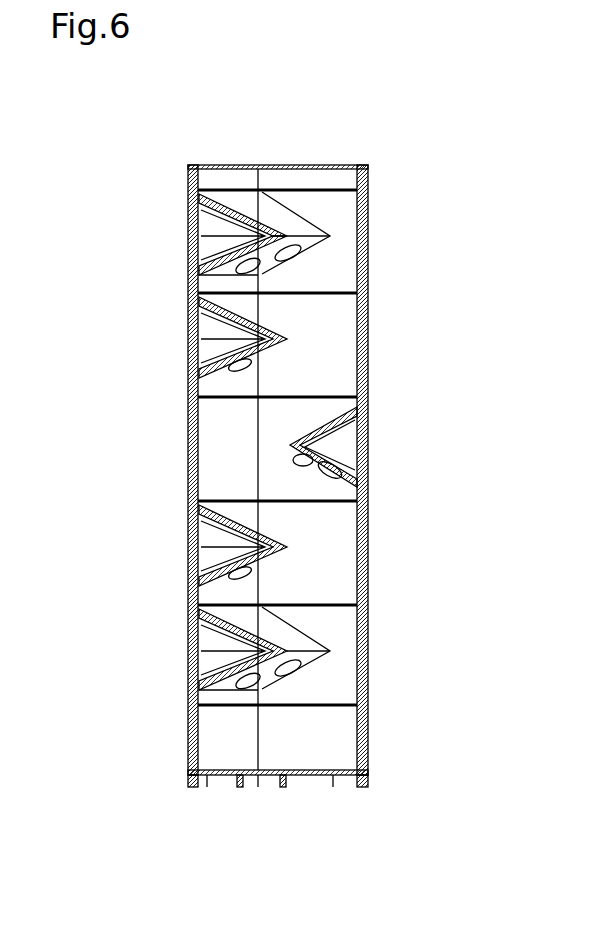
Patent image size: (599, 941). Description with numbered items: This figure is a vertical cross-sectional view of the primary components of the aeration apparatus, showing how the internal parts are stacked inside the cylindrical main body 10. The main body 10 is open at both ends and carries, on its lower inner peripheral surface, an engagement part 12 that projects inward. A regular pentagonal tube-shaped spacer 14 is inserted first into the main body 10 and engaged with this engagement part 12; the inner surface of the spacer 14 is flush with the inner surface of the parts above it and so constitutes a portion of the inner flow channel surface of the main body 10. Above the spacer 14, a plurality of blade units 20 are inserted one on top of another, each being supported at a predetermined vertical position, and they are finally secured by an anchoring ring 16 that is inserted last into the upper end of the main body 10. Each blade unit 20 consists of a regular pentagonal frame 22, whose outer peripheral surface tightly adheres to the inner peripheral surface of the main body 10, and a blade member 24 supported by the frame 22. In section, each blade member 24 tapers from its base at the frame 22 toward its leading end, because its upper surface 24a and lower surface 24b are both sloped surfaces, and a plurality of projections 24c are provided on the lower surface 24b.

The main body 10 is at (190, 345).
The engagement part 12 is at (215, 774).
The spacer 14 is at (338, 747).
The anchoring ring 16 is at (343, 173).
The blade unit 20 is at (380, 211).
The frame 22 is at (337, 232).
The blade member 24 is at (293, 395).
The upper surface 24a is at (248, 188).
The lower surface 24b is at (320, 250).
The projections 24c is at (245, 268).